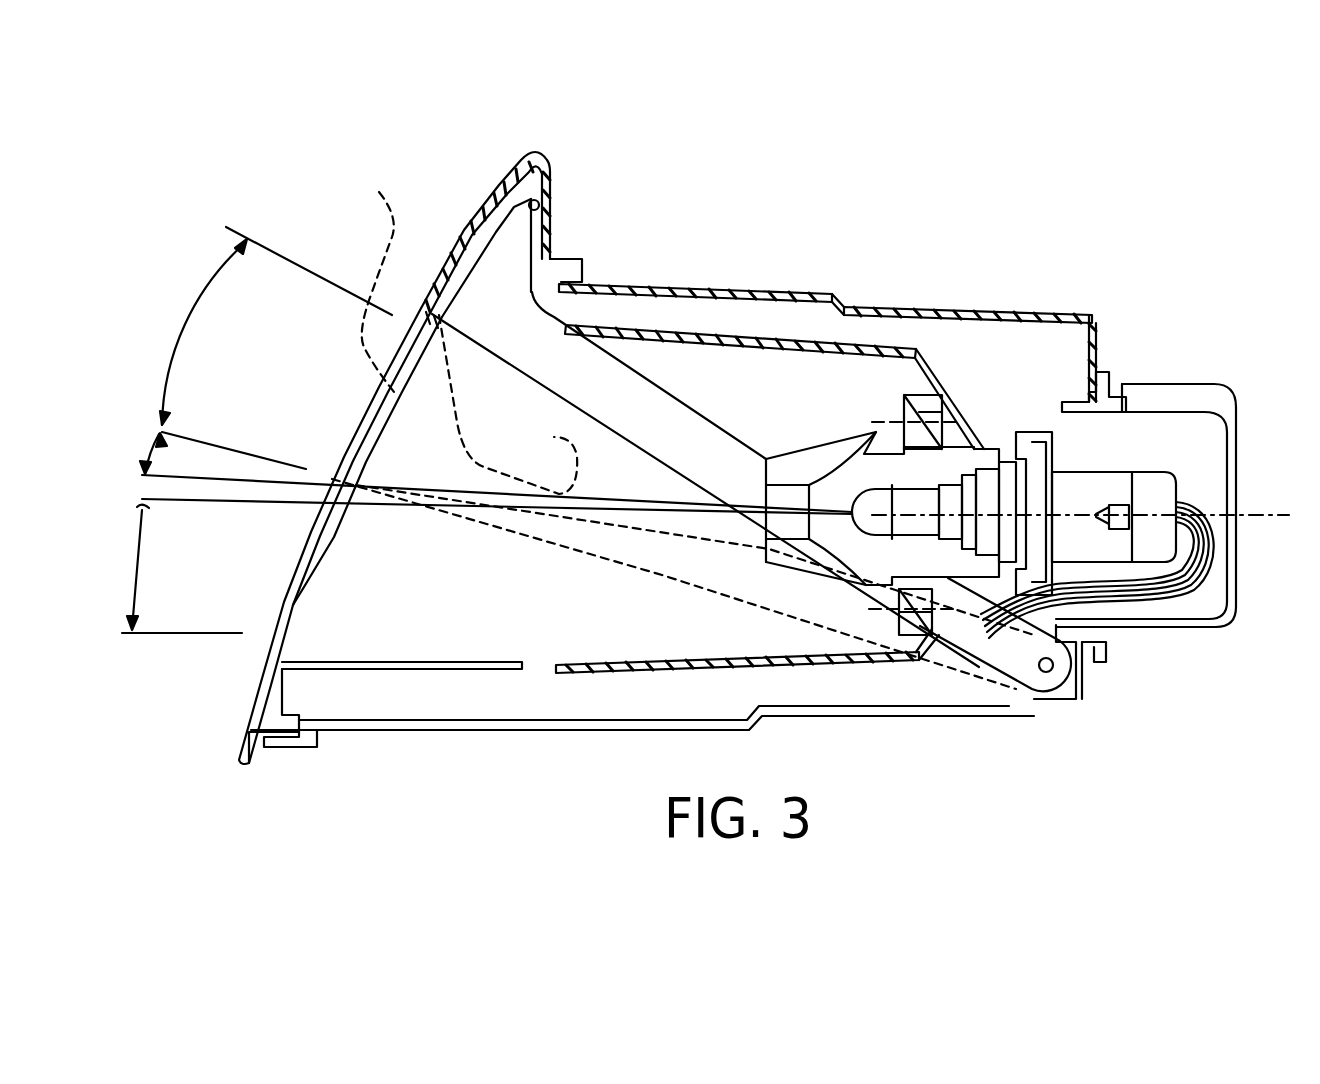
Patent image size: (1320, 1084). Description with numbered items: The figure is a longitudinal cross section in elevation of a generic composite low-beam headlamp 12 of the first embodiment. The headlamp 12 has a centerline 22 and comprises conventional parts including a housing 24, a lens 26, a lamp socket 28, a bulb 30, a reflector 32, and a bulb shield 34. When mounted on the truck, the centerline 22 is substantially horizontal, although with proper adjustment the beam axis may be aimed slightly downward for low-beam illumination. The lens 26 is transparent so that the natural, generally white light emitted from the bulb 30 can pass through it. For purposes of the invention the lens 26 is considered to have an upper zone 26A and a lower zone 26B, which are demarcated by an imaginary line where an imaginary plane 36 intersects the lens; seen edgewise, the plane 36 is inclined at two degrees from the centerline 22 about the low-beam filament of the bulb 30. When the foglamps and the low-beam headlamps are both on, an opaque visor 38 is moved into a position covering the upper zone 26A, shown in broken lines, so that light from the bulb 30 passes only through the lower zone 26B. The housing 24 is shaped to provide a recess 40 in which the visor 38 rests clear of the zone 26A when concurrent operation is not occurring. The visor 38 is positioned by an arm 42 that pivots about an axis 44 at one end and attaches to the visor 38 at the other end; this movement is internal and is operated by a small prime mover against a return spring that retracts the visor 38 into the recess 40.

The headlamp 12 is at (655, 283).
The centerline 22 is at (185, 500).
The housing 24 is at (763, 287).
The lens 26 is at (293, 590).
The upper zone 26A is at (200, 333).
The lower zone 26B is at (137, 593).
The lamp socket 28 is at (1173, 468).
The bulb 30 is at (917, 497).
The reflector 32 is at (700, 667).
The bulb shield 34 is at (820, 445).
The imaginary plane 36 is at (192, 470).
The visor 38 is at (463, 232).
The recess 40 is at (540, 203).
The arm 42 is at (590, 418).
The axis 44 is at (1052, 670).